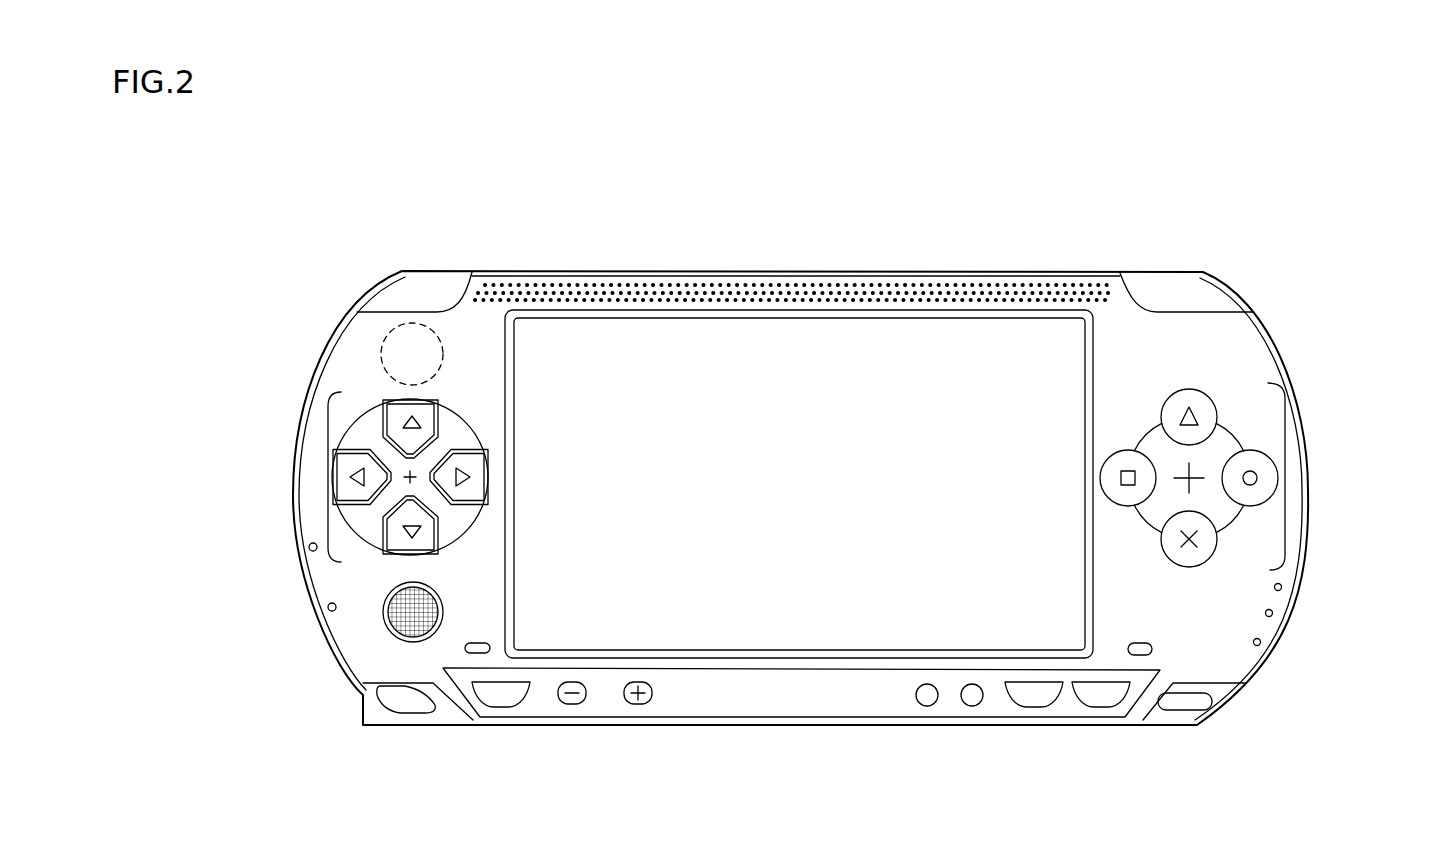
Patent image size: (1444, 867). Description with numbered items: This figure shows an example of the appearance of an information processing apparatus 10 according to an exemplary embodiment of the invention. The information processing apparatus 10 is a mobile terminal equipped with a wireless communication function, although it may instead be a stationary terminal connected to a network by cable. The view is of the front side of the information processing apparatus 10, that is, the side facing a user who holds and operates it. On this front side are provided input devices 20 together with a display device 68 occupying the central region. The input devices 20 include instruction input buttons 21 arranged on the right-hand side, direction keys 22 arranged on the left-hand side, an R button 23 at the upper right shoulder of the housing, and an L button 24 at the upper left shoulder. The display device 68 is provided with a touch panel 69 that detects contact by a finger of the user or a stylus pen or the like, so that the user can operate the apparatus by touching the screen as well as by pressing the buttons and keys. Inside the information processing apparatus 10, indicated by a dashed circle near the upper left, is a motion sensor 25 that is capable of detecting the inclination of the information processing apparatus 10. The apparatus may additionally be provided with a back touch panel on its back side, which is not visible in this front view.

The information processing apparatus 10 is at (818, 829).
The input devices 20 is at (1378, 267).
The instruction input buttons 21 is at (1285, 480).
The direction keys 22 is at (328, 478).
The R button 23 is at (1223, 293).
The L button 24 is at (380, 294).
The motion sensor 25 is at (387, 355).
The display device 68 is at (799, 432).
The touch panel 69 is at (937, 334).